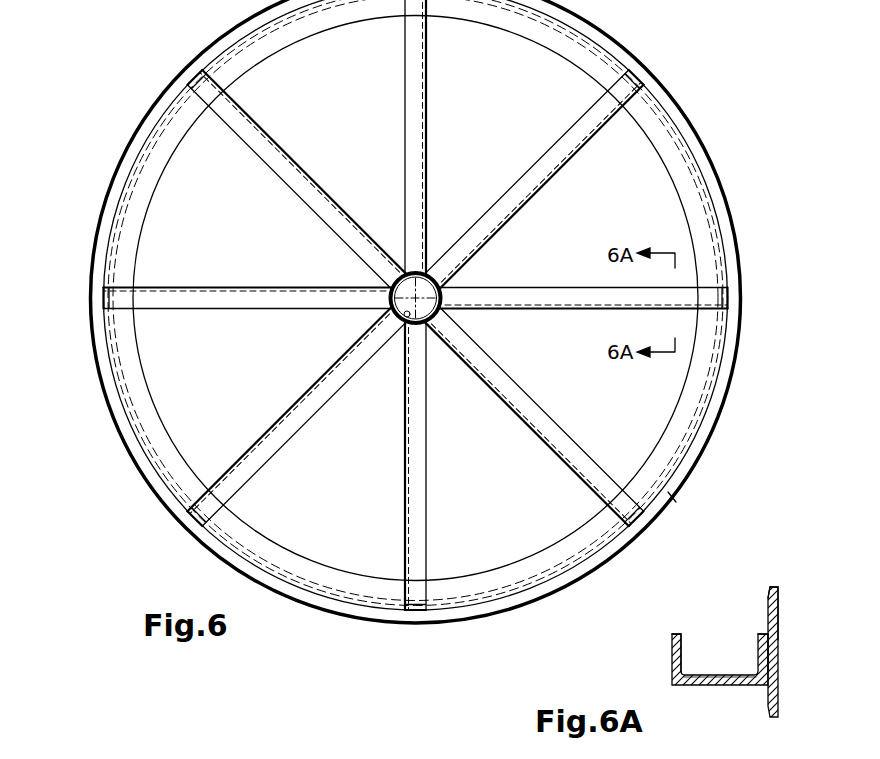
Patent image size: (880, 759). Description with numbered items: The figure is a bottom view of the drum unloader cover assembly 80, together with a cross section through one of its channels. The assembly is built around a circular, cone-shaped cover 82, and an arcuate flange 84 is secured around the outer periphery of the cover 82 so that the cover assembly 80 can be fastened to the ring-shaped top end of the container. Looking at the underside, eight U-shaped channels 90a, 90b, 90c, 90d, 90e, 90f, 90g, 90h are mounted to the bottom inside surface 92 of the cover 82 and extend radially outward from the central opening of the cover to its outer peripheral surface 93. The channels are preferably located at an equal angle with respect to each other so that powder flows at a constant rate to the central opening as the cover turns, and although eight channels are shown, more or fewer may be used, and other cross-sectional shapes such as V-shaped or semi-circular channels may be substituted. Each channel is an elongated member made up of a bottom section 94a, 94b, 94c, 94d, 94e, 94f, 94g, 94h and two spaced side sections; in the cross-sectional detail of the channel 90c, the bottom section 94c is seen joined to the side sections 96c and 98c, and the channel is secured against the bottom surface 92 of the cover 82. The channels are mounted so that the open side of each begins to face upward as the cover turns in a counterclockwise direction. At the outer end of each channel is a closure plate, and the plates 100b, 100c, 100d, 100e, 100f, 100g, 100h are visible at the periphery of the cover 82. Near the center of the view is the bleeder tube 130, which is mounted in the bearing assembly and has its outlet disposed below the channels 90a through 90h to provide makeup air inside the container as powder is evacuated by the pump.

In FIG. 6, the drum unloader cover assembly 80 is at (628, 42).
In FIG. 6, the cover 82 is at (640, 178).
In FIG. 6A, the cover 82 is at (780, 612).
In FIG. 6, the arcuate flange 84 is at (716, 181).
In FIG. 6, the U-shaped channel 90a is at (413, 97).
In FIG. 6, the U-shaped channel 90b is at (558, 153).
In FIG. 6, the U-shaped channel 90c is at (530, 296).
In FIG. 6A, the U-shaped channel 90c is at (712, 686).
In FIG. 6, the U-shaped channel 90d is at (538, 414).
In FIG. 6, the U-shaped channel 90e is at (420, 443).
In FIG. 6, the U-shaped channel 90f is at (302, 418).
In FIG. 6, the U-shaped channel 90g is at (192, 302).
In FIG. 6, the U-shaped channel 90h is at (278, 167).
In FIG. 6, the bottom inside surface 92 is at (193, 178).
In FIG. 6A, the bottom inside surface 92 is at (768, 695).
In FIG. 6, the outer peripheral surface 93 is at (672, 497).
In FIG. 6, the bottom section 94a is at (428, 70).
In FIG. 6, the bottom section 94b is at (488, 243).
In FIG. 6, the bottom section 94c is at (575, 310).
In FIG. 6A, the bottom section 94c is at (728, 678).
In FIG. 6, the bottom section 94d is at (553, 453).
In FIG. 6, the bottom section 94e is at (402, 463).
In FIG. 6, the bottom section 94f is at (278, 417).
In FIG. 6, the bottom section 94g is at (218, 287).
In FIG. 6, the bottom section 94h is at (278, 146).
In FIG. 6A, the side section 96c is at (760, 645).
In FIG. 6A, the side section 98c is at (672, 655).
In FIG. 6, the closure plate 100b is at (641, 82).
In FIG. 6, the closure plate 100c is at (726, 300).
In FIG. 6, the closure plate 100d is at (636, 519).
In FIG. 6, the closure plate 100e is at (415, 612).
In FIG. 6, the closure plate 100f is at (191, 520).
In FIG. 6, the closure plate 100g is at (105, 297).
In FIG. 6, the closure plate 100h is at (196, 78).
In FIG. 6, the bleeder tube 130 is at (404, 320).